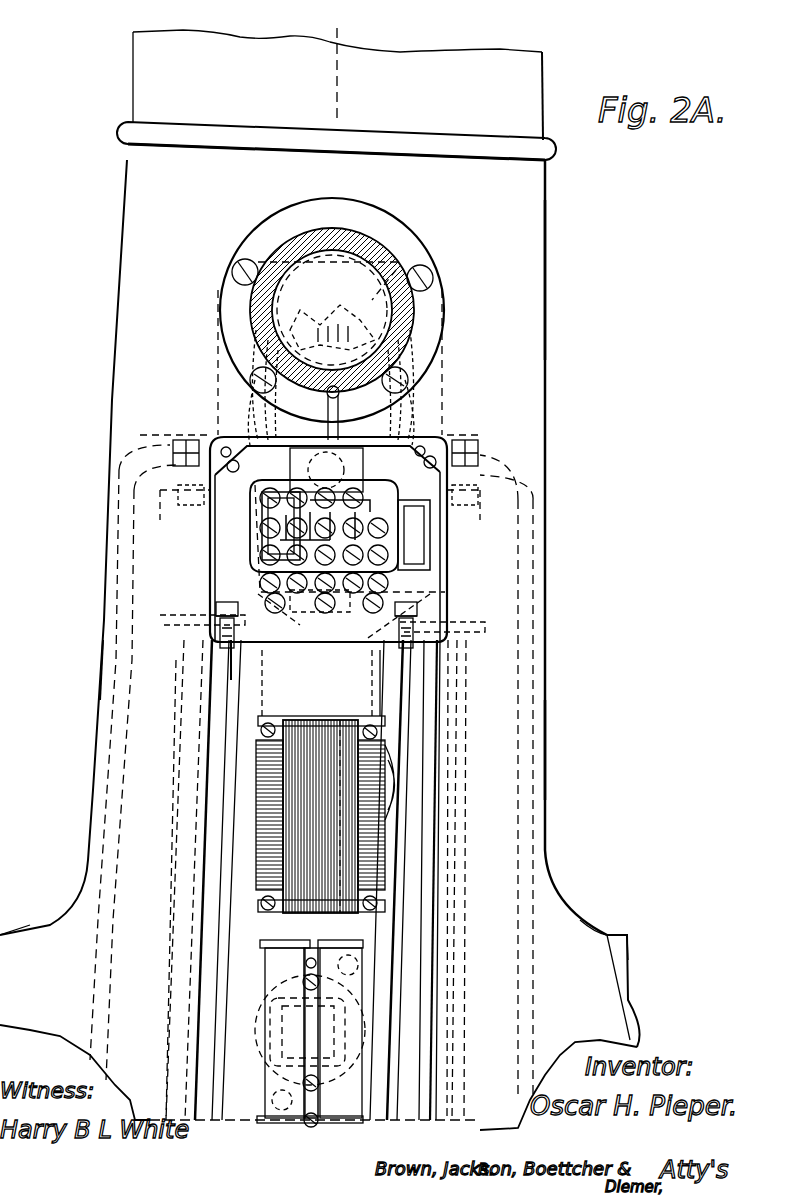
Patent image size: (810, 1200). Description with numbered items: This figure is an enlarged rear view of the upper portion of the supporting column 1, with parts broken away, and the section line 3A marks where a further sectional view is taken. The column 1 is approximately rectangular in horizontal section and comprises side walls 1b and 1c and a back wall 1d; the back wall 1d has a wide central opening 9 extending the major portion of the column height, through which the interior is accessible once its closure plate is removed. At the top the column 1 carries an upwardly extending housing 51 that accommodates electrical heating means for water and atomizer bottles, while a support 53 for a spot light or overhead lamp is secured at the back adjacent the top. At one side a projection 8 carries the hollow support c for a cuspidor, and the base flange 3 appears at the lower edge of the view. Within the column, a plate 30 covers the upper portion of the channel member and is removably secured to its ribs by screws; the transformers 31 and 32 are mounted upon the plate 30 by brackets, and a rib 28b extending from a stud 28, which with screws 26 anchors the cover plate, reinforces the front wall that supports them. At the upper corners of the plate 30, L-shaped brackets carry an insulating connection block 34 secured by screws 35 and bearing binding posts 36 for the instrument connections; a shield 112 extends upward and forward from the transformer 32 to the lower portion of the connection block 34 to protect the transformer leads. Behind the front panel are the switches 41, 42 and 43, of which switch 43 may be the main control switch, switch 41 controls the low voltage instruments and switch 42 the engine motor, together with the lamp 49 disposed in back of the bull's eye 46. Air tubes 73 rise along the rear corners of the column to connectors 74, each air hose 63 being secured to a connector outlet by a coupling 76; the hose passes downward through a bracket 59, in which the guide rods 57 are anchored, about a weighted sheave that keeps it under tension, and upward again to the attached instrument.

The column 1 is at (559, 441).
The side wall 1b is at (547, 740).
The side wall 1c is at (98, 724).
The back wall 1d is at (530, 362).
The housing base flange 3 is at (25, 930).
The section line 3A is at (350, 31).
The projection 8 is at (580, 930).
The opening 9 is at (425, 920).
The screws 26 is at (316, 1108).
The stud 28 is at (318, 1124).
The rib 28b is at (340, 690).
The plate 30 is at (310, 1018).
The transformer 31 is at (310, 1050).
The transformer 32 is at (312, 732).
The connection block 34 is at (395, 548).
The screws 35 is at (292, 628).
The binding posts 36 is at (266, 507).
The switch 41 is at (298, 553).
The switch 42 is at (420, 565).
The switch 43 is at (225, 648).
The bull's eye 46 is at (246, 390).
The lamp 49 is at (402, 390).
The housing 51 is at (134, 72).
The support 53 is at (420, 247).
The rods 57 is at (230, 736).
The brackets 59 is at (238, 620).
The air hose 63 is at (172, 836).
The tubes 73 is at (103, 806).
The connectors 74 is at (195, 436).
The coupling 76 is at (180, 500).
The shield 112 is at (358, 692).
The hollow support c is at (628, 940).